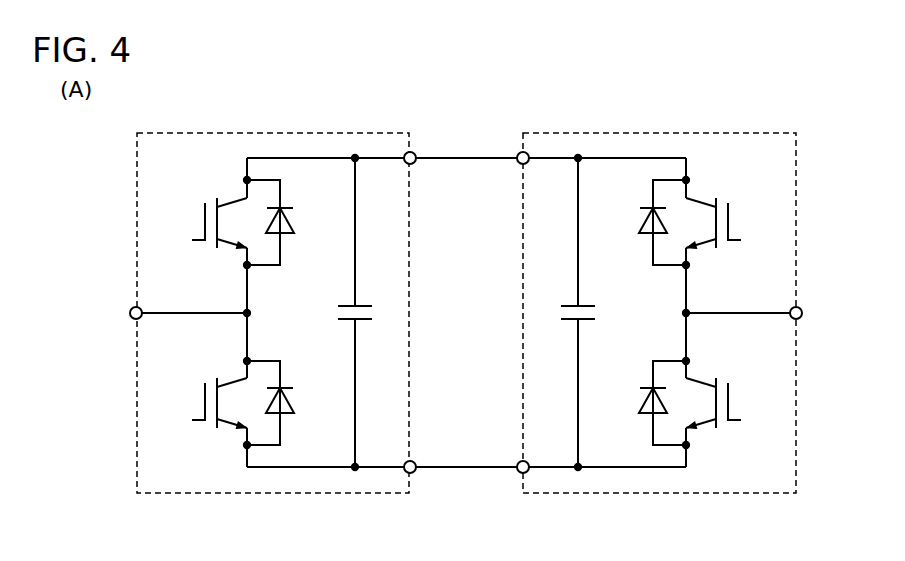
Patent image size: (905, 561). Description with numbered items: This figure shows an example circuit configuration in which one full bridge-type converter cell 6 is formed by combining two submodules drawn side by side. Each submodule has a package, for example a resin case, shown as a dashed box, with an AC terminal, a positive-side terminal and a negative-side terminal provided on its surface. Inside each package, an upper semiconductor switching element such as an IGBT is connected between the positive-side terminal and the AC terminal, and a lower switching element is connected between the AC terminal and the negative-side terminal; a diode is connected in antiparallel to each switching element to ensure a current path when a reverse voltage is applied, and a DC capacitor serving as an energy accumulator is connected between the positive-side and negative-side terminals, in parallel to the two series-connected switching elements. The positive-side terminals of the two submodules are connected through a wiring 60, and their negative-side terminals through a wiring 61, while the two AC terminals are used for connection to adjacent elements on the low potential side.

The full bridge-type converter cell 6 is at (466, 256).
The wiring 60 is at (467, 161).
The wiring 61 is at (465, 464).